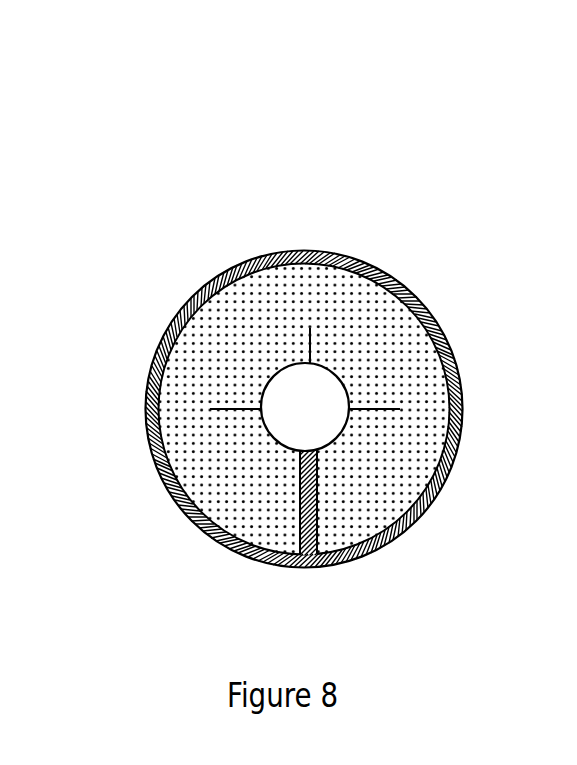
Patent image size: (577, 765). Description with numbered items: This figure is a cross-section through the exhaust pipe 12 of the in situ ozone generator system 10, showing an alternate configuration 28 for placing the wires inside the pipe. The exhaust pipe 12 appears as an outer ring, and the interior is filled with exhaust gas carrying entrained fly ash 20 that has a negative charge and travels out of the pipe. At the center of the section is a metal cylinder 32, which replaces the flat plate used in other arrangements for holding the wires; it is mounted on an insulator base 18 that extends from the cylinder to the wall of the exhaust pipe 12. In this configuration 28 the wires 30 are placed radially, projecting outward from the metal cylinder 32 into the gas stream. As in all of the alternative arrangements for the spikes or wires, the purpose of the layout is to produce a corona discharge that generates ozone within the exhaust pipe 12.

The in situ ozone generator system 10 is at (424, 212).
The exhaust pipe 12 is at (293, 248).
The insulator base 18 is at (320, 514).
The fly ash 20 is at (256, 345).
The alternate configuration 28 is at (203, 373).
The wires 30 is at (314, 338).
The metal cylinder 32 is at (355, 421).